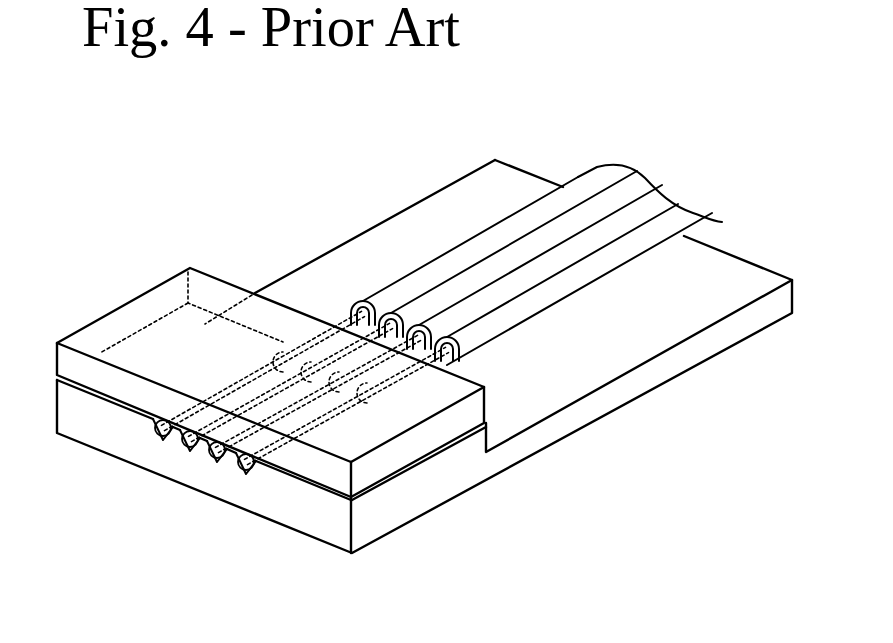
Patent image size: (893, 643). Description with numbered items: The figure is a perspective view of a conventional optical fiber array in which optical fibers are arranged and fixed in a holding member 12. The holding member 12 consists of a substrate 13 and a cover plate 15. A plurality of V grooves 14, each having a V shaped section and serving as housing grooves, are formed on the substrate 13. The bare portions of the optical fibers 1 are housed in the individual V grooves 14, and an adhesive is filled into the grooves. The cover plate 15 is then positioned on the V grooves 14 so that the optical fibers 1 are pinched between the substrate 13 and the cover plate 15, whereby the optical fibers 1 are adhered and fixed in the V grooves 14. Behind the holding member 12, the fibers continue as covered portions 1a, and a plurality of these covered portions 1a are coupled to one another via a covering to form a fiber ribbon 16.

The optical fiber 1 is at (157, 418).
The covered portion of the optical fibers 1a is at (435, 263).
The holding member 12 is at (424, 349).
The substrate 13 is at (457, 485).
The V groove 14 is at (247, 467).
The cover plate 15 is at (163, 293).
The fiber ribbon 16 is at (562, 185).